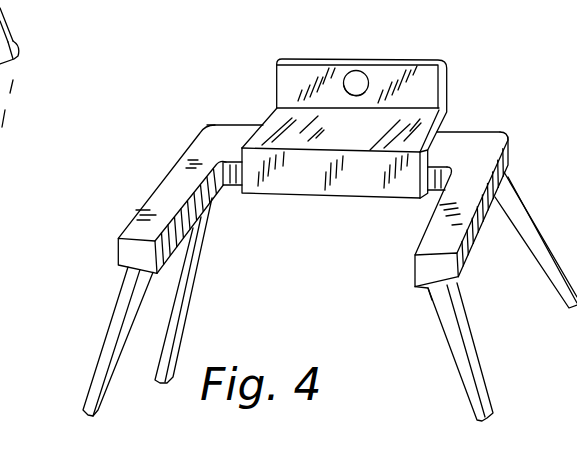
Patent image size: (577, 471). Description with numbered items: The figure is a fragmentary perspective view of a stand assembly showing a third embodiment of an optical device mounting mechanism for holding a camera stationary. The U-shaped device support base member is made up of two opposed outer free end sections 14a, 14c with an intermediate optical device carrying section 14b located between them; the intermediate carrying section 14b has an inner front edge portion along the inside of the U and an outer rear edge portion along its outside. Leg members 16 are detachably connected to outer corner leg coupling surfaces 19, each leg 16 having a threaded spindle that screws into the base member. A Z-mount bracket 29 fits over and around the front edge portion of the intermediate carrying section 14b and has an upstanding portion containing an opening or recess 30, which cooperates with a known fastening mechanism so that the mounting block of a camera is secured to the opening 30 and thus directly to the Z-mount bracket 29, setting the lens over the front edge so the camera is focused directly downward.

The outer free end section 14a is at (422, 262).
The intermediate optical device carrying section 14b is at (233, 178).
The outer free end section 14c is at (140, 228).
The leg member 16 is at (485, 380).
The outer corner leg coupling surface 19 is at (422, 289).
The Z-mount bracket 29 is at (433, 83).
The opening or recess 30 is at (364, 79).